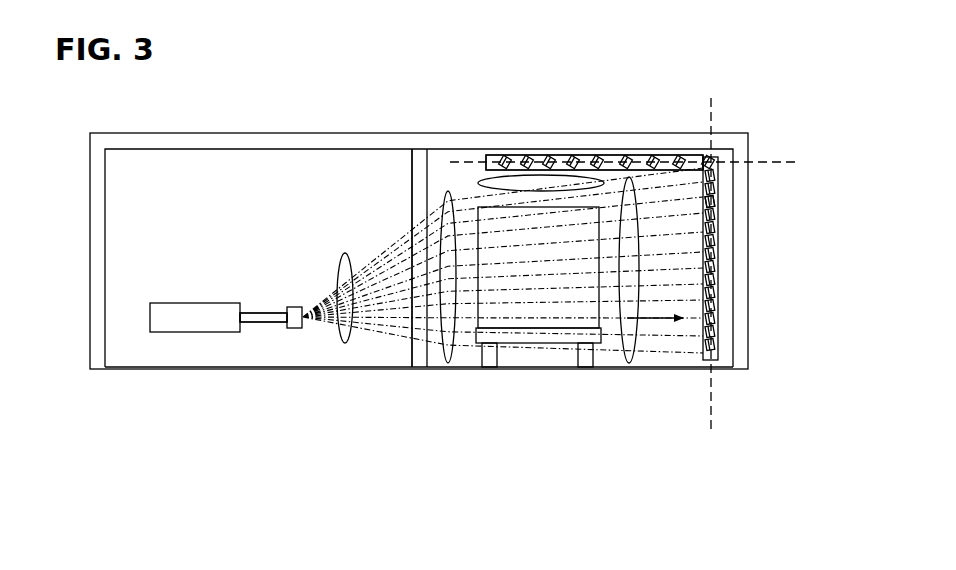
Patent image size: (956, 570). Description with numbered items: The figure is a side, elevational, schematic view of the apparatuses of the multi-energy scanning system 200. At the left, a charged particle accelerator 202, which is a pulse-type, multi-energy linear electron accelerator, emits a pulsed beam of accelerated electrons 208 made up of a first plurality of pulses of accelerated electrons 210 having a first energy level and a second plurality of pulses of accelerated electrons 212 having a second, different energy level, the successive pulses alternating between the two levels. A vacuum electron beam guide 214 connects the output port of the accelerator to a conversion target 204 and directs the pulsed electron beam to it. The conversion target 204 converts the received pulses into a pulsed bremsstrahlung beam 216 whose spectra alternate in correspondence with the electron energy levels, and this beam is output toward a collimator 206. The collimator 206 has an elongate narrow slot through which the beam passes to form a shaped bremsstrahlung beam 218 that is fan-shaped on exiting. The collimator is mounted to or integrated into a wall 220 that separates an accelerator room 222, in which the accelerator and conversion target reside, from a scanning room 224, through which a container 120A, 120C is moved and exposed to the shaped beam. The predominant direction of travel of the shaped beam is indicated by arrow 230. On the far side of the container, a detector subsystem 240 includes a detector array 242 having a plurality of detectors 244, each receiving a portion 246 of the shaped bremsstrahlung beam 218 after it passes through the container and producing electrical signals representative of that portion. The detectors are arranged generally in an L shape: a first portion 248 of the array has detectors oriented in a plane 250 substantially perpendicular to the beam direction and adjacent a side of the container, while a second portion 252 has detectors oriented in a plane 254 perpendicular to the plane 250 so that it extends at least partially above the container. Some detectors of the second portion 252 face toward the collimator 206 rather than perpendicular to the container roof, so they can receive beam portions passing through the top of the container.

The multi-energy scanning system 200 is at (330, 75).
The charged particle accelerator 202 is at (210, 303).
The conversion target 204 is at (293, 307).
The collimator 206 is at (415, 227).
The pulsed beam of accelerated electrons 208 is at (229, 380).
The first plurality of pulses of accelerated electrons 210 is at (229, 380).
The second plurality of pulses of accelerated electrons 212 is at (270, 318).
The vacuum electron beam guide 214 is at (260, 313).
The pulsed bremsstrahlung beam 216 is at (347, 253).
The shaped bremsstrahlung beam 218 is at (450, 355).
The wall 220 is at (417, 355).
The accelerator room 222 is at (138, 350).
The scanning room 224 is at (538, 353).
The container 120A is at (517, 385).
The container 120C is at (570, 335).
The arrow indicating predominant direction of travel of the shaped bremsstrahlung be 230 is at (643, 318).
The detector subsystem 240 is at (655, 200).
The detector array 242 is at (583, 152).
The detectors 244 is at (527, 160).
The portion of the shaped bremsstrahlung beam 246 is at (587, 175).
The first portion of the detector array 248 is at (717, 212).
The plane 250 is at (712, 98).
The second portion of the detector array 252 is at (605, 157).
The plane 254 is at (468, 162).